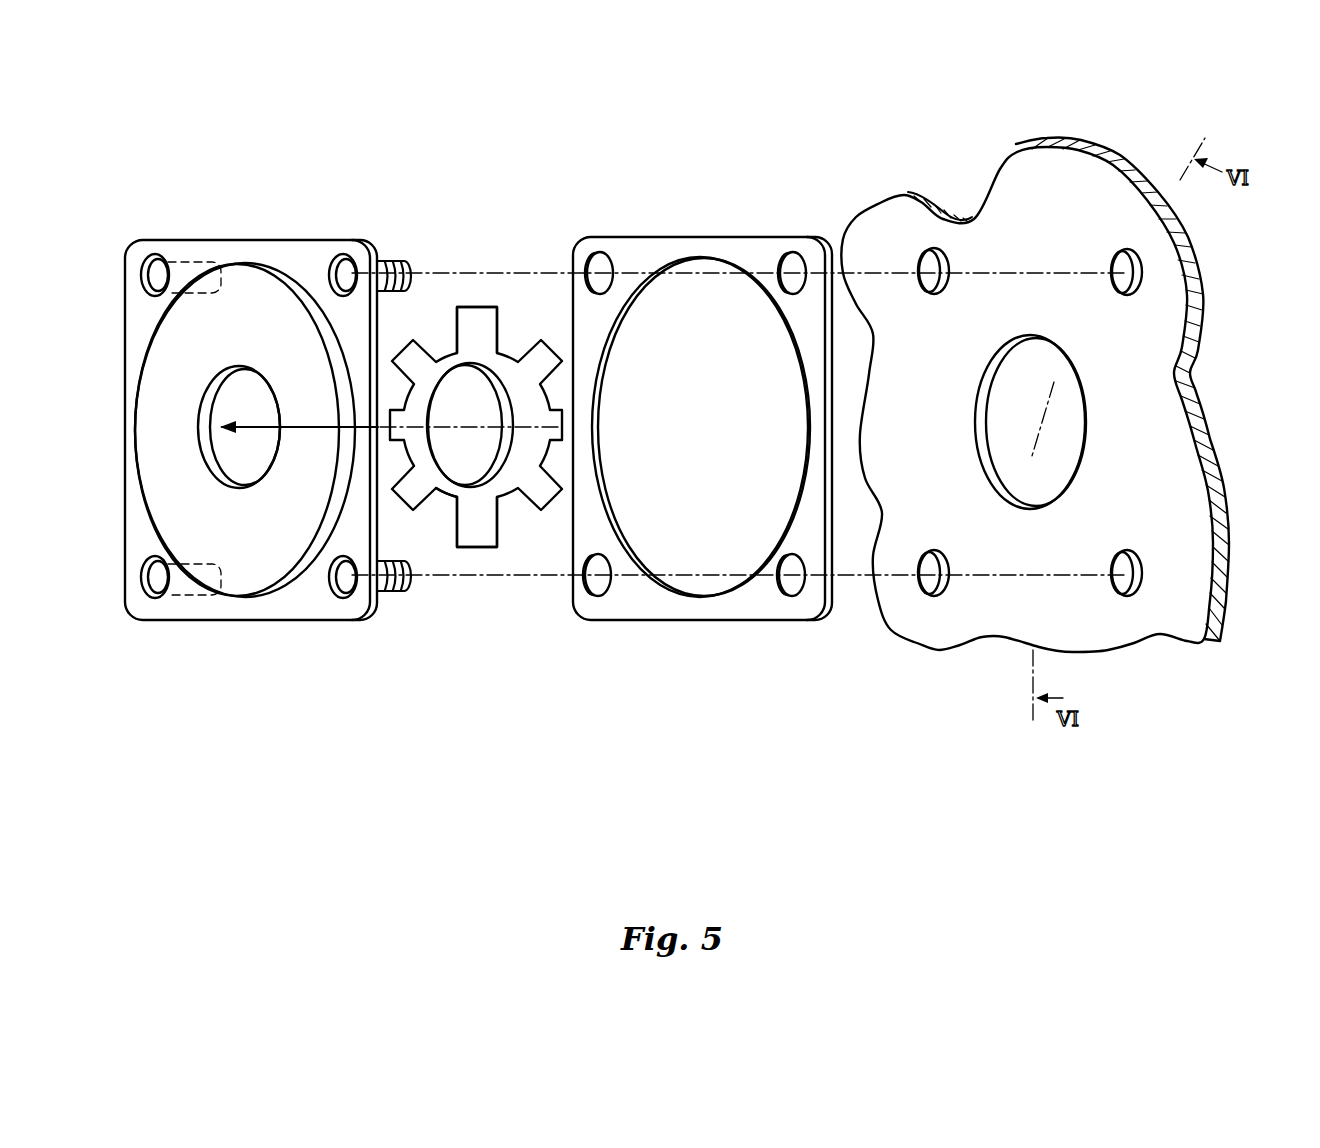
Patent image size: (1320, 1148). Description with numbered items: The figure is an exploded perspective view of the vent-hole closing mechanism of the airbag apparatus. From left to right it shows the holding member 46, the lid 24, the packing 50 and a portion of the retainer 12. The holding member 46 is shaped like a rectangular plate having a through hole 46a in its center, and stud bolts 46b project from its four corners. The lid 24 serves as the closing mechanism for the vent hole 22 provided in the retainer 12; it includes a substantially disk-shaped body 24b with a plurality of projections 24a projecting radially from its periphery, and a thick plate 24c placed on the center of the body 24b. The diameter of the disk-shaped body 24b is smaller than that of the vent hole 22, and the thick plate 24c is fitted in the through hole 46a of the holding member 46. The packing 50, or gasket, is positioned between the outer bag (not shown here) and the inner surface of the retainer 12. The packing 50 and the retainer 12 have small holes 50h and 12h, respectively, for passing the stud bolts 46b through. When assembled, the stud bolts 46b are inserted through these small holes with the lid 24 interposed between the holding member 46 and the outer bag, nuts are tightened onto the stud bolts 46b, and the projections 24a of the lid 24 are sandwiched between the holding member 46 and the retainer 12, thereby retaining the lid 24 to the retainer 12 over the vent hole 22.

The retainer 12 is at (1072, 146).
The small holes of the retainer 12h is at (1143, 260).
The vent hole 22 is at (986, 390).
The lid 24 is at (478, 288).
The projections 24a is at (500, 332).
The disk-shaped body 24b is at (448, 507).
The thick plate 24c is at (452, 392).
The holding member 46 is at (268, 234).
The through hole 46a is at (238, 458).
The stud bolts 46b is at (399, 258).
The packing 50 is at (745, 236).
The small holes of the packing 50h is at (793, 260).